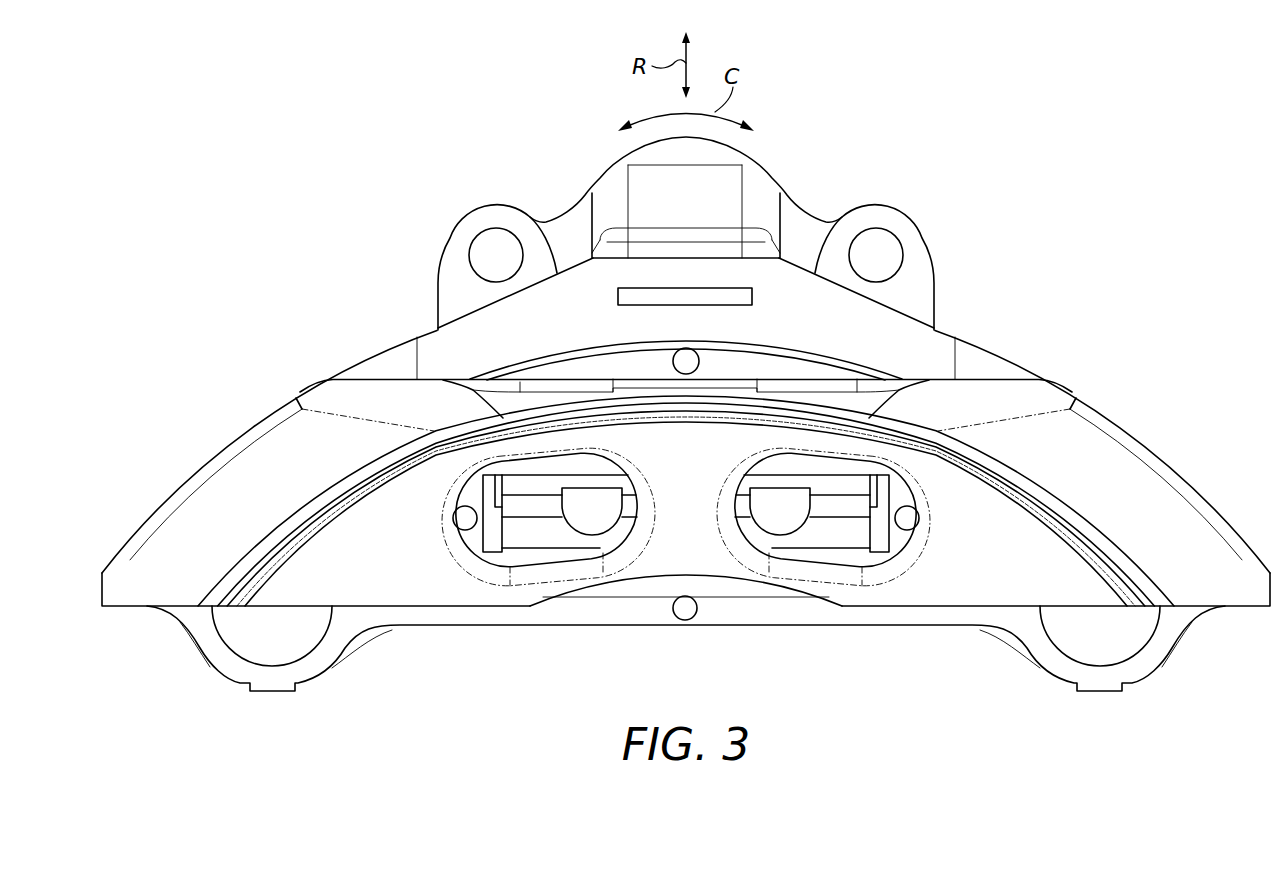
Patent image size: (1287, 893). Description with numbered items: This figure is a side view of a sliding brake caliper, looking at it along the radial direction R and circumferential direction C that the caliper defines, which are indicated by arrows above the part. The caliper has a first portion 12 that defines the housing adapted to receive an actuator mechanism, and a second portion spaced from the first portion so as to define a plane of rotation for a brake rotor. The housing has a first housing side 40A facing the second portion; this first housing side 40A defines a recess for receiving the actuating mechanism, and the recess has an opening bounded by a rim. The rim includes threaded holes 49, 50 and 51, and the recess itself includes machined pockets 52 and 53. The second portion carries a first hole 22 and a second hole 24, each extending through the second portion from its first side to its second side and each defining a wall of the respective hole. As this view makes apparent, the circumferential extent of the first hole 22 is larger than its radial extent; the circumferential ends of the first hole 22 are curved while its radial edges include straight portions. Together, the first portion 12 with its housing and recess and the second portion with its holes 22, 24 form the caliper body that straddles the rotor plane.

The first portion 12 is at (918, 230).
The first hole 22 is at (853, 555).
The second hole 24 is at (548, 558).
The first housing side 40A is at (825, 508).
The threaded hole 49 is at (685, 620).
The threaded hole 50 is at (462, 518).
The threaded hole 51 is at (910, 518).
The machined pocket 52 is at (778, 527).
The machined pocket 53 is at (593, 522).